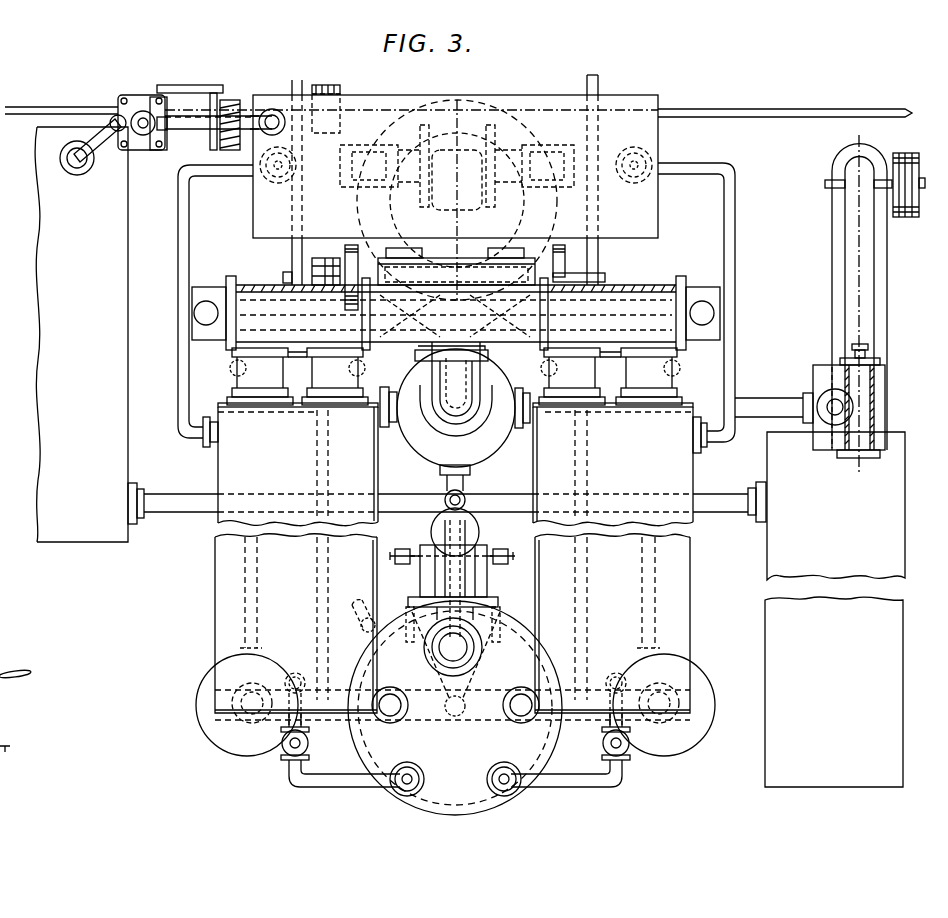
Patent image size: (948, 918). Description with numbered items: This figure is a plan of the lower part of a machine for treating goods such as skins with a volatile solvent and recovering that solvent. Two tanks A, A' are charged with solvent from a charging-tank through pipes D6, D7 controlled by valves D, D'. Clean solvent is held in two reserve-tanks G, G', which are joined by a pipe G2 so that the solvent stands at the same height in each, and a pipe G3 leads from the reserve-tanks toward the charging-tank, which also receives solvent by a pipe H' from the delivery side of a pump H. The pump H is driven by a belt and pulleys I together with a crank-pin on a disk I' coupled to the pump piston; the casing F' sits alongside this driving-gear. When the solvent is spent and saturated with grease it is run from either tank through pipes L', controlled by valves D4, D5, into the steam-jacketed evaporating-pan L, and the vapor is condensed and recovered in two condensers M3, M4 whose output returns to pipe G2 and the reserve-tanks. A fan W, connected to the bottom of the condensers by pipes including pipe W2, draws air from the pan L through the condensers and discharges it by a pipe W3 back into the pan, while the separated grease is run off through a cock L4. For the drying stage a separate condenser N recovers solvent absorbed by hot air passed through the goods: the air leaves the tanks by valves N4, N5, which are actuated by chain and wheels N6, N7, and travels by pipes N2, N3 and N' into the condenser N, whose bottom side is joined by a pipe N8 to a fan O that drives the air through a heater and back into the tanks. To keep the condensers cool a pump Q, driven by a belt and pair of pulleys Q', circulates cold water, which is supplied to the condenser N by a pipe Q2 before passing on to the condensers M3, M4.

The pipe G3 is at (80, 165).
The belt and pulleys I is at (142, 107).
The pump H is at (143, 149).
The disk I' is at (198, 142).
The pipe H' is at (267, 102).
The housing box F' is at (455, 166).
The valve D is at (264, 175).
The valve D' is at (647, 172).
The fan O is at (457, 200).
The pipe D6 is at (184, 247).
The pipe D7 is at (729, 233).
The reserve-tank G is at (81, 334).
The reserve-tank G' is at (835, 609).
The pipe G2 is at (447, 500).
The chain and wheel N6 is at (234, 289).
The chain and wheel N7 is at (676, 289).
The pipe N8 is at (462, 268).
The pipe N2 is at (356, 282).
The valve N4 is at (416, 376).
The valve N5 is at (492, 376).
The pipe N3 is at (302, 345).
The tank A is at (296, 558).
The tank A' is at (613, 558).
The condenser N is at (455, 428).
The pipe N' is at (456, 389).
The fan W is at (485, 574).
The pipe W2 is at (494, 618).
The pipe W3 is at (453, 647).
The cock L4 is at (368, 620).
The steam-jacketed pan L is at (455, 708).
The condenser M3 is at (247, 705).
The condenser M4 is at (664, 705).
The valve D4 is at (309, 744).
The valve D5 is at (602, 742).
The pipe L' is at (455, 772).
The pump Q is at (856, 303).
The belt and pair of pulleys Q' is at (909, 197).
The pipe Q2 is at (752, 399).